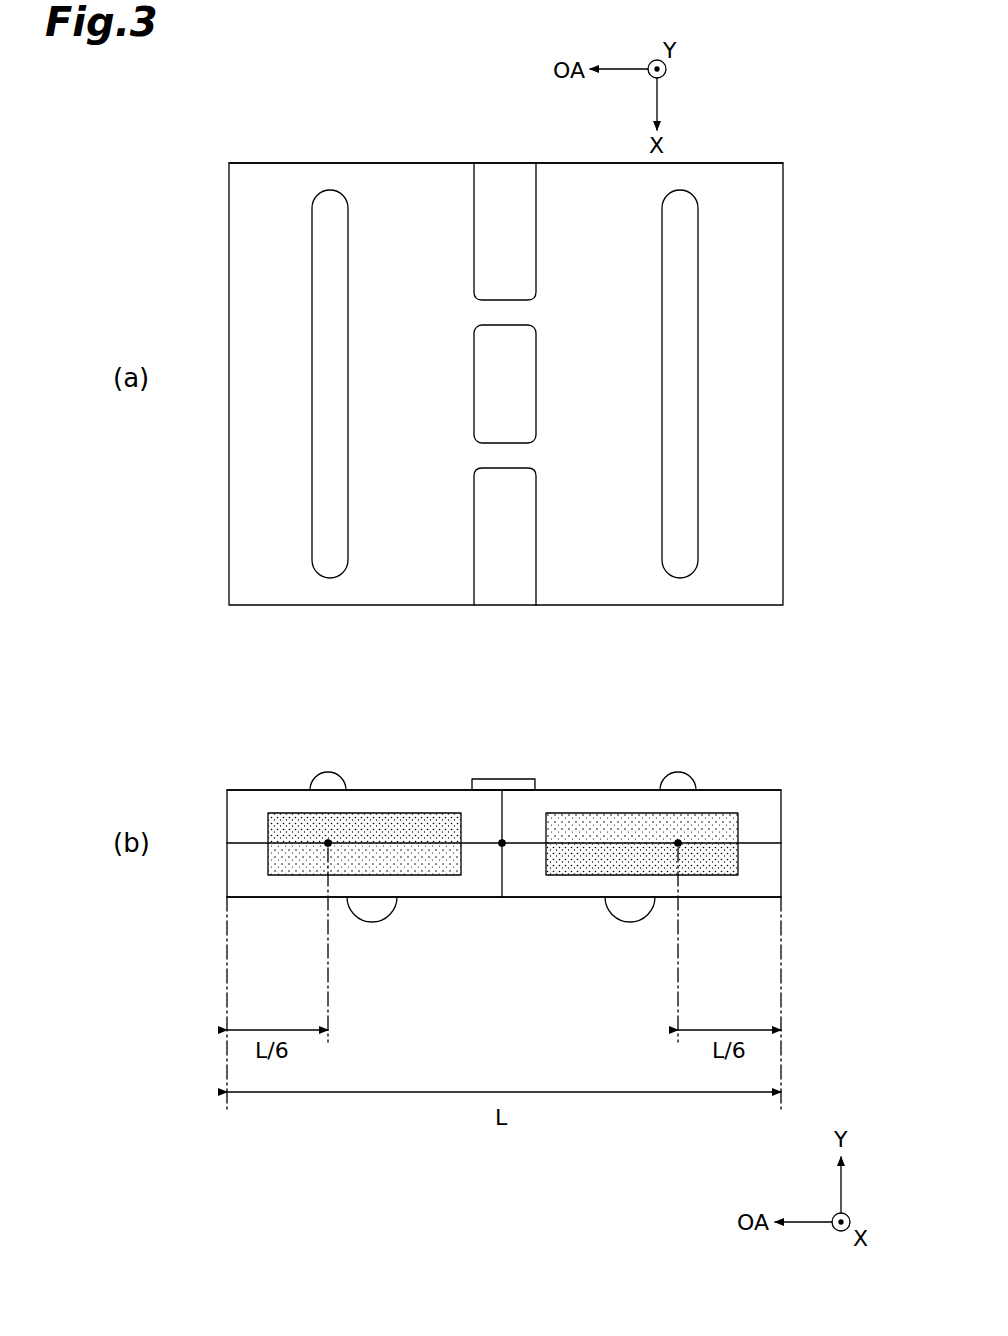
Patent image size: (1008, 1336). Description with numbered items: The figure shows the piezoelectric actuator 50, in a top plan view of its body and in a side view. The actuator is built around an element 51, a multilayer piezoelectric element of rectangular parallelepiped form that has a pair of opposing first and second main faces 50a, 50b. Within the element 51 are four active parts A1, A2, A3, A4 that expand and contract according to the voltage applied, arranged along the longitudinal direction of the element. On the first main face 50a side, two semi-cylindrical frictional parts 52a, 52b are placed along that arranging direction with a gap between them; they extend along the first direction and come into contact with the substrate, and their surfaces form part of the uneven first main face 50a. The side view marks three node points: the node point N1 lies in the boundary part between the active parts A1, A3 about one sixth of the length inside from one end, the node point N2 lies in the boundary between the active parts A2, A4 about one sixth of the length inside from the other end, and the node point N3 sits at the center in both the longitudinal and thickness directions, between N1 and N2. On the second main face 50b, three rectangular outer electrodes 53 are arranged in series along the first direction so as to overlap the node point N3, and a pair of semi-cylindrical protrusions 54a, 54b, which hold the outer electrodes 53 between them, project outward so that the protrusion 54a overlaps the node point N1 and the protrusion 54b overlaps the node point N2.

The piezoelectric actuator 50 is at (790, 104).
The first main face 50a is at (742, 901).
The second main face 50b is at (762, 217).
The element 51 is at (785, 303).
The frictional part 52a is at (372, 905).
The frictional part 52b is at (630, 905).
The outer electrodes 53 is at (518, 500).
The protrusion 54a is at (337, 538).
The protrusion 54b is at (672, 538).
The active part A1 is at (410, 826).
The active part A2 is at (630, 826).
The active part A3 is at (420, 862).
The active part A4 is at (678, 862).
The node point N1 is at (328, 843).
The node point N2 is at (678, 843).
The node point N3 is at (502, 843).